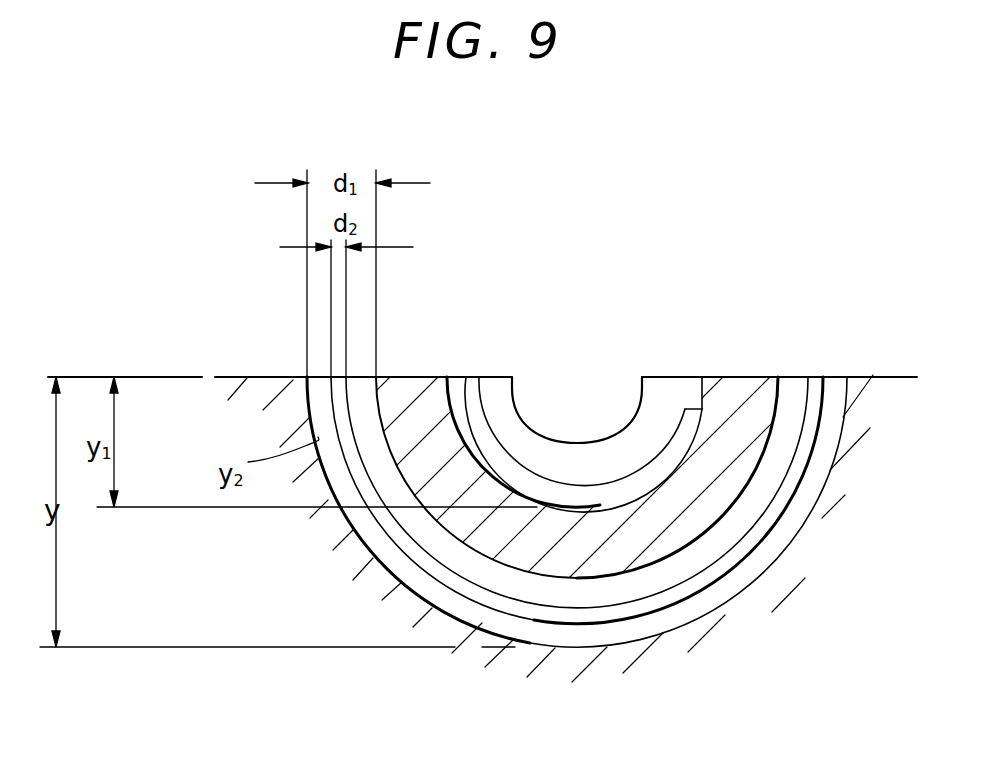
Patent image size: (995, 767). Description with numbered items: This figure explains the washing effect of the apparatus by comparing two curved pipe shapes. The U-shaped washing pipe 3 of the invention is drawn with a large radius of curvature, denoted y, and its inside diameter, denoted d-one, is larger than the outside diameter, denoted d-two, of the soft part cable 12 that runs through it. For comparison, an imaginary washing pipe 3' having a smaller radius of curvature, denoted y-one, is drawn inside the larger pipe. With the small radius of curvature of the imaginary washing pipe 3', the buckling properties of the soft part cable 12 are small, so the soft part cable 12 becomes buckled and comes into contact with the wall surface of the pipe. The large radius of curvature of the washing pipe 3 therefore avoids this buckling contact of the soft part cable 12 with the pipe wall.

The washing pipe 3 is at (577, 538).
The imaginary washing pipe 3' is at (574, 398).
The soft part cable 12 is at (669, 444).